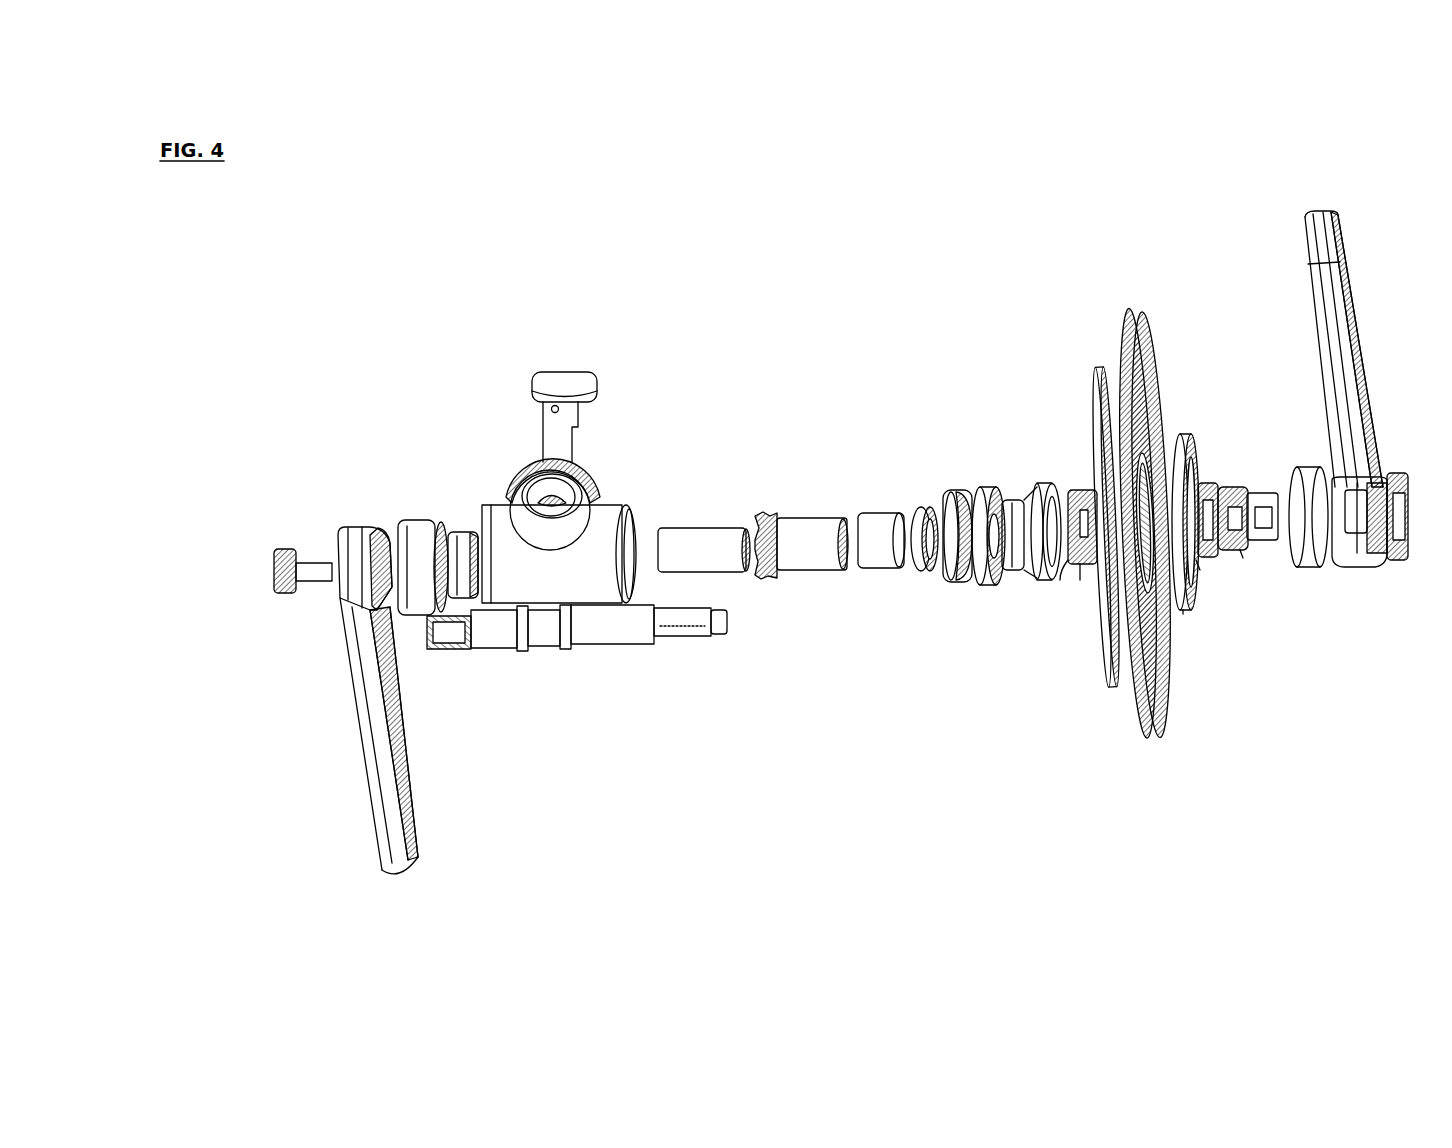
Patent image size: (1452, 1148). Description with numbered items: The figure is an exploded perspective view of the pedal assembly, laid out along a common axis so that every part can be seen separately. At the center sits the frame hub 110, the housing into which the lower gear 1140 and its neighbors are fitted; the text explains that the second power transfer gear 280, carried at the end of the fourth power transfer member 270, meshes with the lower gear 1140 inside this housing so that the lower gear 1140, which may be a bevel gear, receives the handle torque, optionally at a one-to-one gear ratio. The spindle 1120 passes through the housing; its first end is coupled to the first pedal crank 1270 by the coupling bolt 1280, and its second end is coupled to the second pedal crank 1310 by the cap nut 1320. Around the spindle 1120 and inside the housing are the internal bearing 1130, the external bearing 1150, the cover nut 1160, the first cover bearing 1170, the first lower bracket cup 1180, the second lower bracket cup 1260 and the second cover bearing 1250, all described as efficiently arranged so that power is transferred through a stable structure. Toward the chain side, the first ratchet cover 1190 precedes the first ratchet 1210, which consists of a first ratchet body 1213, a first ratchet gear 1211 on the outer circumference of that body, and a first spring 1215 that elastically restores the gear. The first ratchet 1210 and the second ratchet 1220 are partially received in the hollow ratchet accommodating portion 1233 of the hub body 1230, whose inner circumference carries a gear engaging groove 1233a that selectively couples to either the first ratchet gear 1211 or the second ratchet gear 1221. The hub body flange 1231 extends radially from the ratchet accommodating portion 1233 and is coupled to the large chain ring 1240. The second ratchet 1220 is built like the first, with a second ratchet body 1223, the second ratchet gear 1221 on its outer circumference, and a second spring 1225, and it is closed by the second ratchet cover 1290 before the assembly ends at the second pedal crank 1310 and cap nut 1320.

The housing 110 is at (613, 524).
The fourth power transfer member 270 is at (572, 432).
The second power transfer gear 280 is at (597, 466).
The spindle 1120 is at (614, 640).
The internal bearing 1130 is at (720, 558).
The lower gear 1140 is at (803, 515).
The external bearing 1150 is at (880, 560).
The cover nut 1160 is at (926, 570).
The first cover bearing 1170 is at (950, 500).
The first lower bracket cup 1180 is at (983, 487).
The first ratchet cover 1190 is at (1045, 565).
The first ratchet 1210 is at (1077, 488).
The first ratchet gear 1211 is at (1110, 556).
The first ratchet body 1213 is at (1067, 570).
The first spring 1215 is at (1083, 570).
The second ratchet 1220 is at (1233, 482).
The second ratchet gear 1221 is at (1238, 553).
The second ratchet body 1223 is at (1262, 492).
The second spring 1225 is at (1258, 493).
The hub body 1230 is at (1184, 427).
The hub body flange 1231 is at (1180, 440).
The ratchet accommodating portion 1233 is at (1183, 615).
The gear engaging groove 1233a is at (1197, 567).
The chain ring 1240 is at (1140, 316).
The second cover bearing 1250 is at (461, 540).
The second lower bracket cup 1260 is at (417, 530).
The first pedal crank 1270 is at (368, 802).
The coupling bolt 1280 is at (283, 551).
The second ratchet cover 1290 is at (1300, 568).
The second pedal crank 1310 is at (1353, 570).
The cap nut 1320 is at (1397, 560).